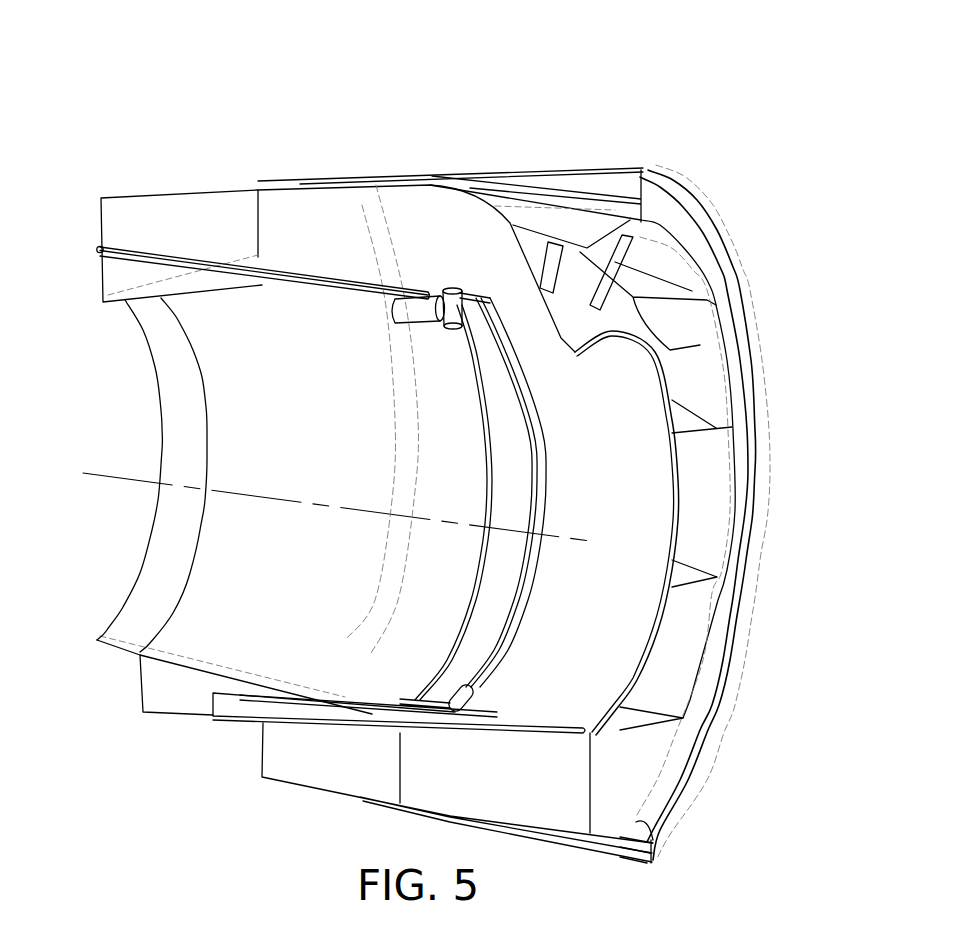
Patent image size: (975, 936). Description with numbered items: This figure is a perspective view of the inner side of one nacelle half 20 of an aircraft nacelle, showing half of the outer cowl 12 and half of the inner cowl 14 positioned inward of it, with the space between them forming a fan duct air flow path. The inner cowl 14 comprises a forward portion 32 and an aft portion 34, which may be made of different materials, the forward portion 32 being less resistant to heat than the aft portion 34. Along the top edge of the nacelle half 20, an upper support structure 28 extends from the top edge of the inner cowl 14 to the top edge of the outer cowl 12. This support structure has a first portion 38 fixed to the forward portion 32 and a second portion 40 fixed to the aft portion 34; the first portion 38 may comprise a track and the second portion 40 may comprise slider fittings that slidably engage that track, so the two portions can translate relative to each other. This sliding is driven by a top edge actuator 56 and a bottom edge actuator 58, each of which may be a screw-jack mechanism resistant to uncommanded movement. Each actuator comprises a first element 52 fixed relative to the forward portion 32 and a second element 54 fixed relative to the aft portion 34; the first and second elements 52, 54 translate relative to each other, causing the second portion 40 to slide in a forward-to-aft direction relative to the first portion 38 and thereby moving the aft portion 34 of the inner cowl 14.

The outer cowl 12 is at (699, 174).
The inner cowl 14 is at (293, 337).
The first nacelle half 20 is at (129, 112).
The upper support structure 28 is at (93, 212).
The forward portion 32 is at (633, 518).
The aft portion 34 is at (237, 435).
The first portion 38 is at (205, 220).
The second portion 40 is at (122, 274).
The first element 52 is at (446, 290).
The second element 54 is at (495, 304).
The top edge actuator 56 is at (378, 266).
The bottom edge actuator 58 is at (505, 695).